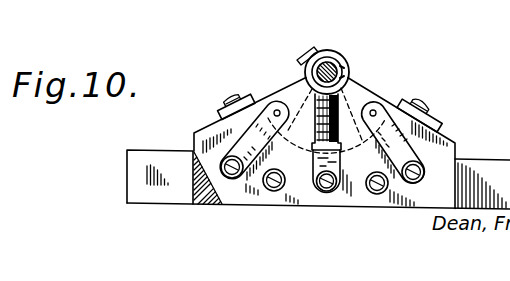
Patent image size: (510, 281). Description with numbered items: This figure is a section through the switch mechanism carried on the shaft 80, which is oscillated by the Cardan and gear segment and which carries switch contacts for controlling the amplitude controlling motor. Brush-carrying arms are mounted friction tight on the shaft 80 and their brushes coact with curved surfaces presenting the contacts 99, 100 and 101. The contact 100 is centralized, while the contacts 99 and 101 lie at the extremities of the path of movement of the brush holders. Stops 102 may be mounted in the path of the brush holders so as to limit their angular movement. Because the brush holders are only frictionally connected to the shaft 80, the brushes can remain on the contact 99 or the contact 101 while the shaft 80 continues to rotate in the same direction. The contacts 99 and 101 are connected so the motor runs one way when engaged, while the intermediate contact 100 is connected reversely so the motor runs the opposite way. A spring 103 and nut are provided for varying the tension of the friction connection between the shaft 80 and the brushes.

The shaft 80 is at (345, 68).
The contact 99 is at (257, 112).
The contact 100 is at (338, 157).
The contact 101 is at (398, 110).
The stop 102 is at (277, 112).
The spring 103 is at (343, 74).